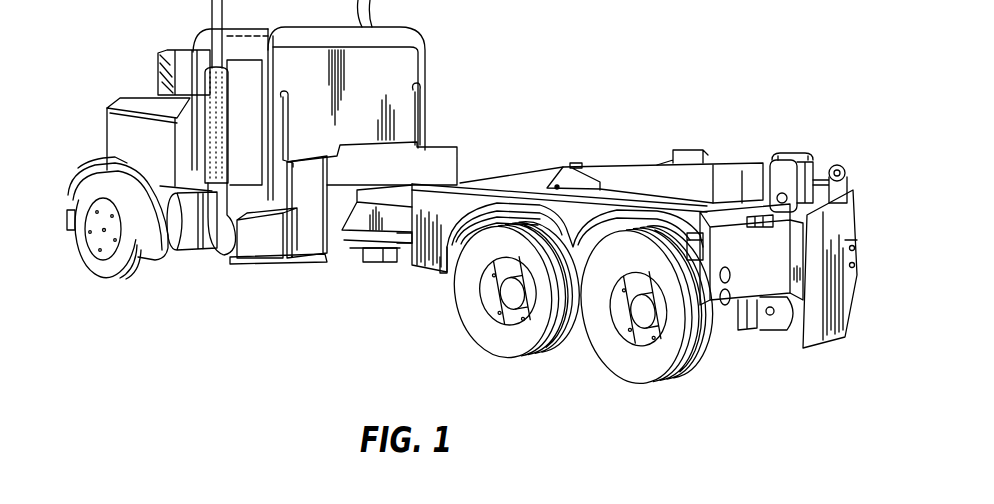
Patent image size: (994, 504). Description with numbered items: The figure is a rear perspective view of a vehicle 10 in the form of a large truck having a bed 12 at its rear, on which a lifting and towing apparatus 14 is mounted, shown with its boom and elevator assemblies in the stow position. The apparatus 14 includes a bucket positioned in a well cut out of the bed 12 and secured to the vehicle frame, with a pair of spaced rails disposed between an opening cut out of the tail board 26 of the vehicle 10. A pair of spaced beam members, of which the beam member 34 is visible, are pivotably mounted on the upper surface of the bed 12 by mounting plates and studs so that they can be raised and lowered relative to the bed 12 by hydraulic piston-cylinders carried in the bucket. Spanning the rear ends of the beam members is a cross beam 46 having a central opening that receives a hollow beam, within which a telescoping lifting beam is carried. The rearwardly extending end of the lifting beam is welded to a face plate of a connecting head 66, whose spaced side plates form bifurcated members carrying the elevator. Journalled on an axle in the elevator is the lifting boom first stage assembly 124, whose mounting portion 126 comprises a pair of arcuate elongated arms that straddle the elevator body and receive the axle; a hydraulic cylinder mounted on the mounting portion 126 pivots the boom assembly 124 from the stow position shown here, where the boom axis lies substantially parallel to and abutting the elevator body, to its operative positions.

The vehicle 10 is at (490, 114).
The bed 12 is at (527, 182).
The beam member 34 is at (630, 182).
The cross beam 46 is at (745, 160).
The connecting head 66 is at (797, 152).
The lifting and towing apparatus 14 is at (828, 151).
The tail board 26 is at (753, 292).
The lifting boom first stage assembly 124 is at (845, 287).
The mounting portion 126 is at (776, 327).